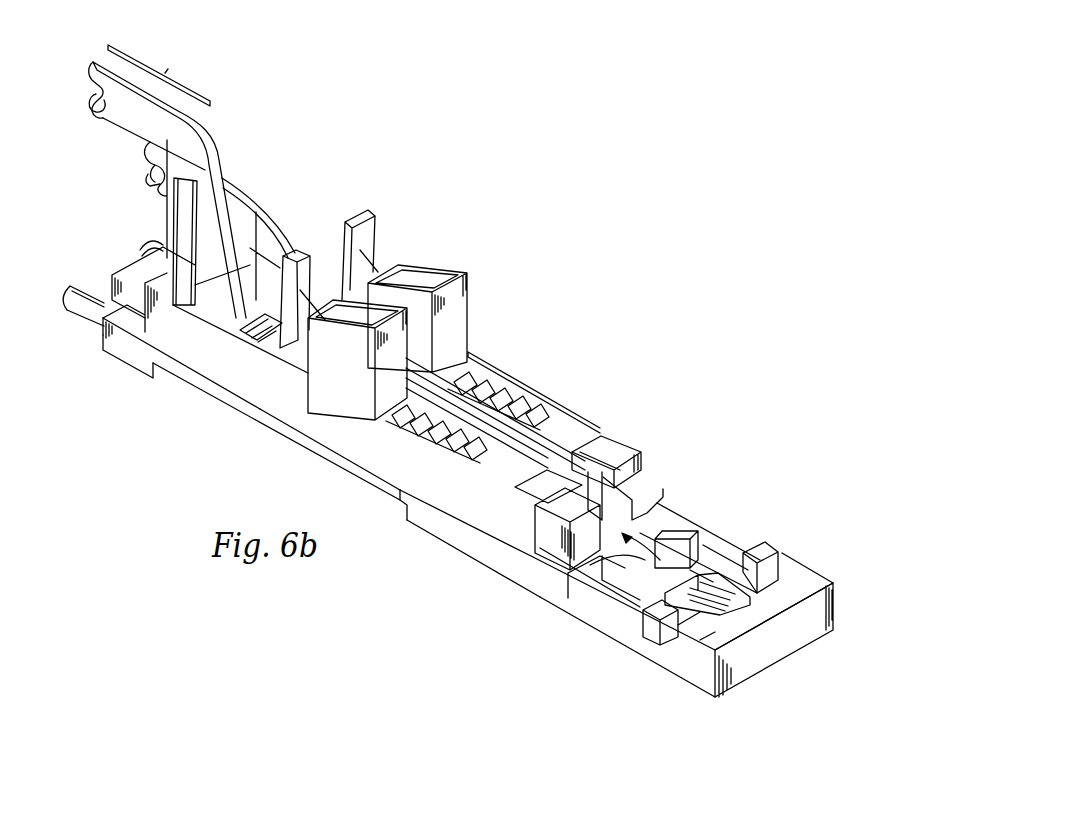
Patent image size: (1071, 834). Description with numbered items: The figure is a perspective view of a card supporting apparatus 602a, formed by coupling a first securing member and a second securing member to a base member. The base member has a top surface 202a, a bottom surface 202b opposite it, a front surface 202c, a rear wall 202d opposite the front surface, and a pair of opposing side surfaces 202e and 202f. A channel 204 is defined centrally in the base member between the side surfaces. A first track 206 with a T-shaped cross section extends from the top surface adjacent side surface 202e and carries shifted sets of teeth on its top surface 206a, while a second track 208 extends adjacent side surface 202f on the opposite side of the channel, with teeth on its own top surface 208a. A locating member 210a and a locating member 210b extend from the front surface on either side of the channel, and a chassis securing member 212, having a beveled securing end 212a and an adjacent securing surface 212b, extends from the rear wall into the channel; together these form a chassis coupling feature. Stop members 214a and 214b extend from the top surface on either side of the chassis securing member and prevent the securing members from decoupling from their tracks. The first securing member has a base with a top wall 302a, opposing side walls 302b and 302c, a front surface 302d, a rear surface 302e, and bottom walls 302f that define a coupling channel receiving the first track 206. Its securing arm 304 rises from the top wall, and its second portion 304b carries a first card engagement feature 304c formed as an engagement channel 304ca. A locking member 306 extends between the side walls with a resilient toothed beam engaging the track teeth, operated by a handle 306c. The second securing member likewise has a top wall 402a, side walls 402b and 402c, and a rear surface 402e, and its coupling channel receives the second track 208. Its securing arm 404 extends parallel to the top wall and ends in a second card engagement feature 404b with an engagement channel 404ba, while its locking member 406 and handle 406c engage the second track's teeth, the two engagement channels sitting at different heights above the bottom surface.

The top surface 202a is at (590, 597).
The bottom surface 202b is at (748, 682).
The front surface 202c is at (98, 342).
The rear wall 202d is at (773, 657).
The side surface 202e is at (352, 465).
The side surface 202f is at (786, 560).
The channel 204 is at (706, 568).
The first track 206 is at (110, 266).
The top surface 206a is at (548, 500).
The second track 208 is at (664, 474).
The top surface 208a is at (614, 465).
The locating member 210a is at (68, 322).
The locating member 210b is at (148, 250).
The chassis securing member 212 is at (690, 628).
The beveled securing end 212a is at (606, 600).
The securing surface 212b is at (690, 552).
The stop member 214a is at (665, 640).
The stop member 214b is at (754, 578).
The top wall 302a is at (522, 470).
The side wall 302b is at (310, 410).
The side wall 302c is at (562, 367).
The front surface 302d is at (140, 332).
The rear surface 302e is at (515, 553).
The bottom walls 302f is at (530, 607).
The securing arm 304 is at (216, 133).
The second portion 304b is at (165, 75).
The first card engagement feature 304c is at (82, 82).
The engagement channel 304ca is at (104, 117).
The locking member 306 is at (340, 359).
The handle 306c is at (299, 250).
The top wall 402a is at (575, 418).
The side wall 402b is at (588, 460).
The side wall 402c is at (490, 368).
The rear surface 402e is at (650, 455).
The securing arm 404 is at (262, 190).
The second card engagement feature 404b is at (141, 165).
The engagement channel 404ba is at (150, 183).
The locking member 406 is at (433, 263).
The handle 406c is at (380, 195).
The card supporting apparatus 602a is at (522, 245).